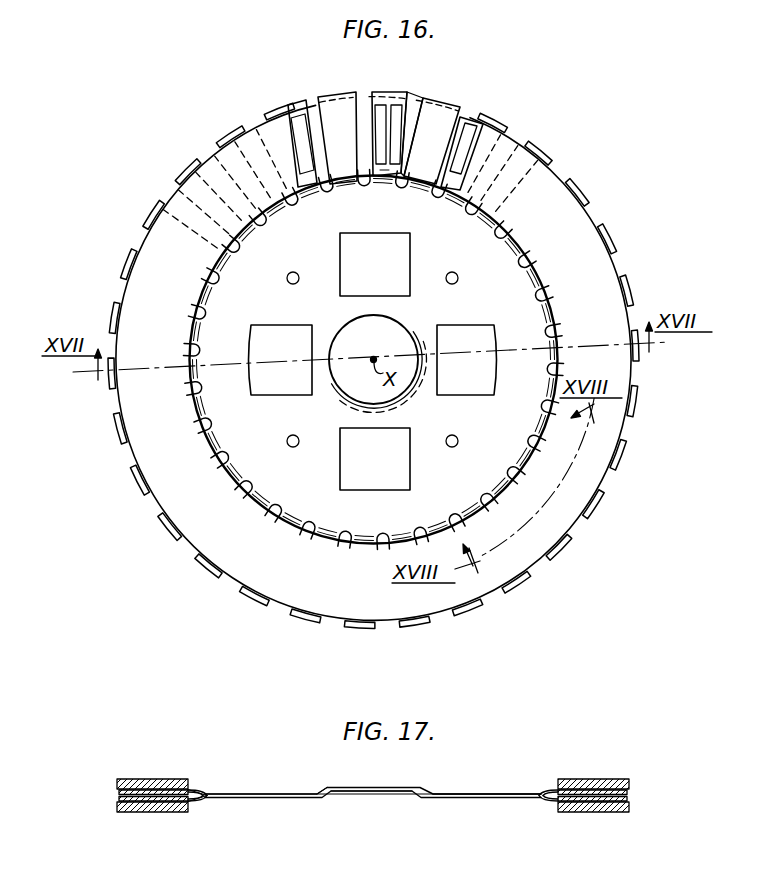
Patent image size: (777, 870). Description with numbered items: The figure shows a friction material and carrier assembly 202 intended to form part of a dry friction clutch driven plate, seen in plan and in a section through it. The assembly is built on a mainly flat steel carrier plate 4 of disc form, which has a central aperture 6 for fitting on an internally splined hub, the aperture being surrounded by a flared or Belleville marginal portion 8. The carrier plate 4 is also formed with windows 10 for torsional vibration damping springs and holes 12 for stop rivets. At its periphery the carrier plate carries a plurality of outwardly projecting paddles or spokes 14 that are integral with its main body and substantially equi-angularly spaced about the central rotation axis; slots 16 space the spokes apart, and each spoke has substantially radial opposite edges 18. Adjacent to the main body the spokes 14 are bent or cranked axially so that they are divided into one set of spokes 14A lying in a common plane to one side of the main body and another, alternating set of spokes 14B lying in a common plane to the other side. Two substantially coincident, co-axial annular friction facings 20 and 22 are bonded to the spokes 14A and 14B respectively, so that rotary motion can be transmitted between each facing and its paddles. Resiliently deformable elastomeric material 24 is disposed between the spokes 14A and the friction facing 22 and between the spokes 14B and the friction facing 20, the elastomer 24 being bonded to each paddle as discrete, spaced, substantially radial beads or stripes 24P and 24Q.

In FIG. 16, the carrier plate 4 is at (268, 289).
In FIG. 17, the carrier plate 4 is at (240, 793).
In FIG. 16, the central aperture 6 is at (397, 328).
In FIG. 17, the central aperture 6 is at (386, 786).
In FIG. 17, the flared marginal portion 8 is at (326, 788).
In FIG. 16, the windows 10 is at (288, 378).
In FIG. 17, the windows 10 is at (450, 792).
In FIG. 16, the holes 12 is at (295, 447).
In FIG. 16, the spokes 14 is at (455, 89).
In FIG. 17, the spokes 14 is at (202, 809).
In FIG. 16, the first set of spokes 14A is at (333, 90).
In FIG. 17, the first set of spokes 14A is at (194, 790).
In FIG. 16, the second set of spokes 14B is at (386, 97).
In FIG. 17, the second set of spokes 14B is at (115, 805).
In FIG. 16, the slots 16 is at (333, 187).
In FIG. 16, the radial edges 18 is at (328, 188).
In FIG. 16, the friction facing 20 is at (583, 216).
In FIG. 17, the friction facing 20 is at (148, 779).
In FIG. 16, the friction facing 22 is at (432, 148).
In FIG. 17, the friction facing 22 is at (163, 812).
In FIG. 16, the elastomeric material 24 is at (384, 170).
In FIG. 17, the elastomeric material 24 is at (116, 794).
In FIG. 16, the elastomer beads 24P is at (292, 115).
In FIG. 16, the elastomer beads 24Q is at (377, 93).
In FIG. 16, the friction material and carrier assembly 202 is at (622, 260).
In FIG. 17, the friction material and carrier assembly 202 is at (461, 781).